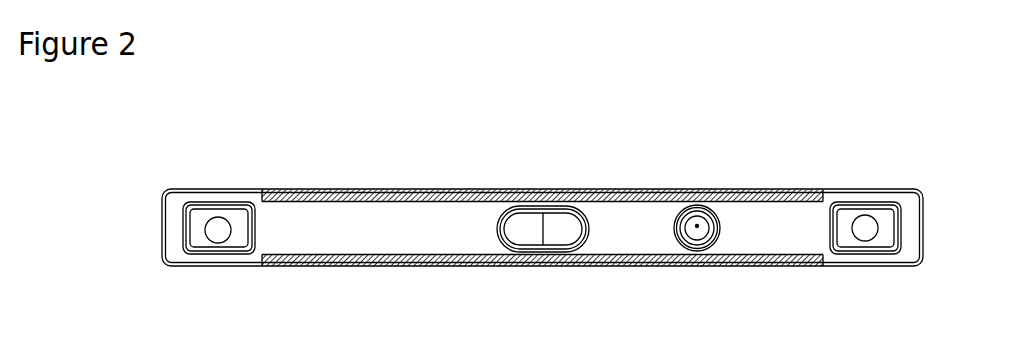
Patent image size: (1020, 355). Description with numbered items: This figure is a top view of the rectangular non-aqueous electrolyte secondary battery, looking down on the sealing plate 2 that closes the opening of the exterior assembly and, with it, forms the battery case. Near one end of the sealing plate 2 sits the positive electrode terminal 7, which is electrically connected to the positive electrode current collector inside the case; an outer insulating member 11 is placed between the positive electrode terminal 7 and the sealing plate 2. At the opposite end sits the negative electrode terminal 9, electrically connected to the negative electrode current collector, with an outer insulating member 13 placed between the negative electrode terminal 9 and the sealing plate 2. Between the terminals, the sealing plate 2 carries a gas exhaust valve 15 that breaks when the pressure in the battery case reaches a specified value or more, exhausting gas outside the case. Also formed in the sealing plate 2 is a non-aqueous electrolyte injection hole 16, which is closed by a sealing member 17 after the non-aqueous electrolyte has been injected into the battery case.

The sealing plate 2 is at (629, 237).
The positive electrode terminal 7 is at (865, 241).
The negative electrode terminal 9 is at (218, 243).
The outer insulating member 11 is at (867, 203).
The outer insulating member 13 is at (228, 203).
The gas exhaust valve 15 is at (527, 233).
The non-aqueous electrolyte injection hole 16 is at (697, 240).
The sealing member 17 is at (697, 224).